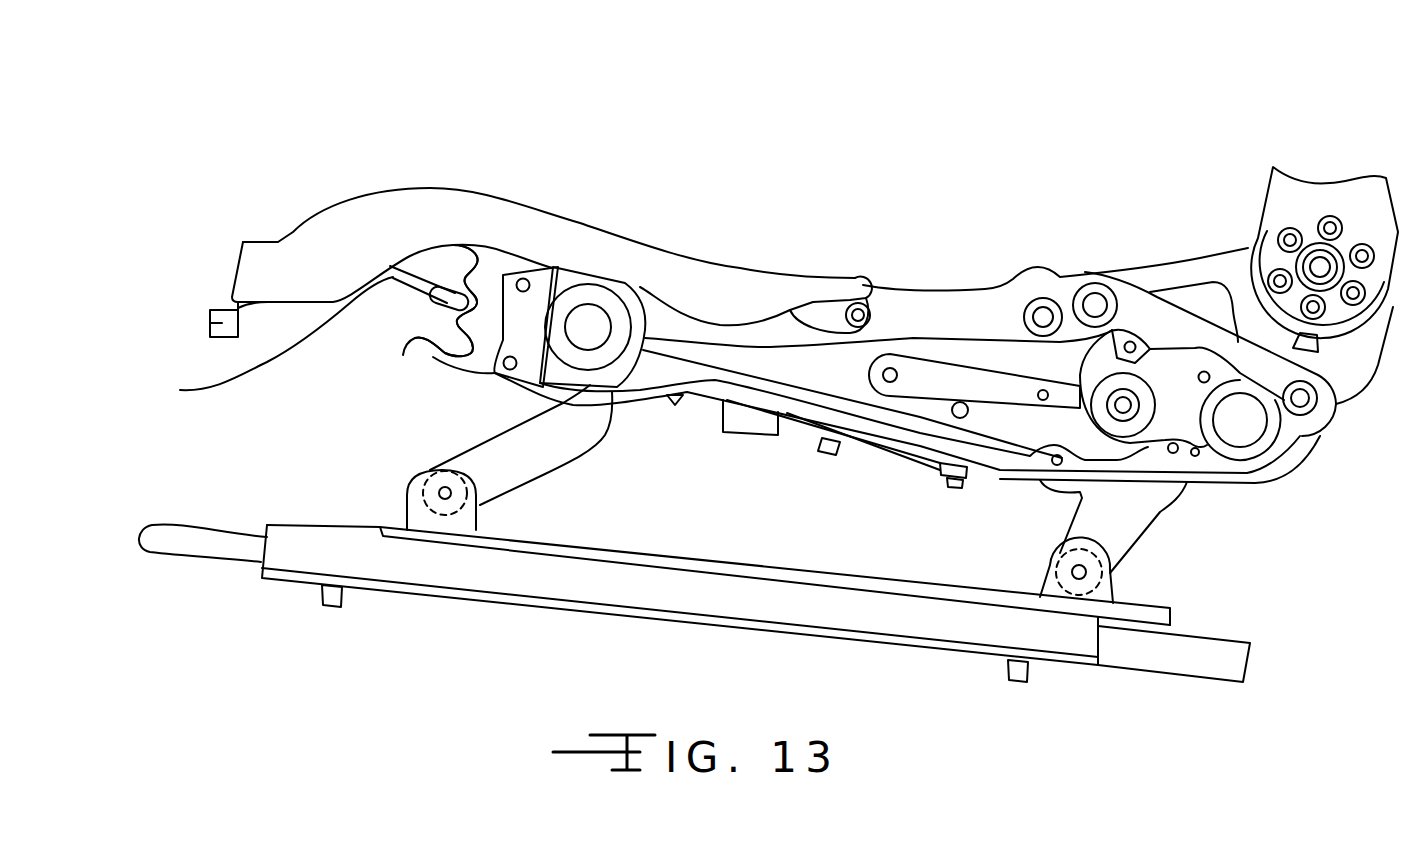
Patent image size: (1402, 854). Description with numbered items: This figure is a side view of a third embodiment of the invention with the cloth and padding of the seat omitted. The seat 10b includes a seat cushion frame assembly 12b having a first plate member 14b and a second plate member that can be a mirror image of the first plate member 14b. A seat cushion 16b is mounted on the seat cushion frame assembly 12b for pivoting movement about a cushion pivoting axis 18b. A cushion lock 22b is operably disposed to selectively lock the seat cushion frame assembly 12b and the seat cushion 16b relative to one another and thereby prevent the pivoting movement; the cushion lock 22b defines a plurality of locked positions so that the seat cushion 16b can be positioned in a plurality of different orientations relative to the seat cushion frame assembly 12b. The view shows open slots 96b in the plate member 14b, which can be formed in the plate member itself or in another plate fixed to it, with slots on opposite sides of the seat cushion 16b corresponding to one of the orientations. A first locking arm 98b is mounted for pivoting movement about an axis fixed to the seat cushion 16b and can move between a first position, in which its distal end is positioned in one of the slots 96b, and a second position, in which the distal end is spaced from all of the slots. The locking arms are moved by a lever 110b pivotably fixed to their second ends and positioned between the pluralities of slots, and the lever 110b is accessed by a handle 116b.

The seat 10b is at (960, 122).
The seat cushion frame assembly 12b is at (1108, 238).
The first plate member 14b is at (965, 316).
The seat cushion 16b is at (373, 182).
The cushion pivoting axis 18b is at (860, 313).
The cushion lock 22b is at (277, 408).
The open slots 96b is at (403, 355).
The first locking arm 98b is at (400, 278).
The lever 110b is at (180, 390).
The handle 116b is at (222, 323).